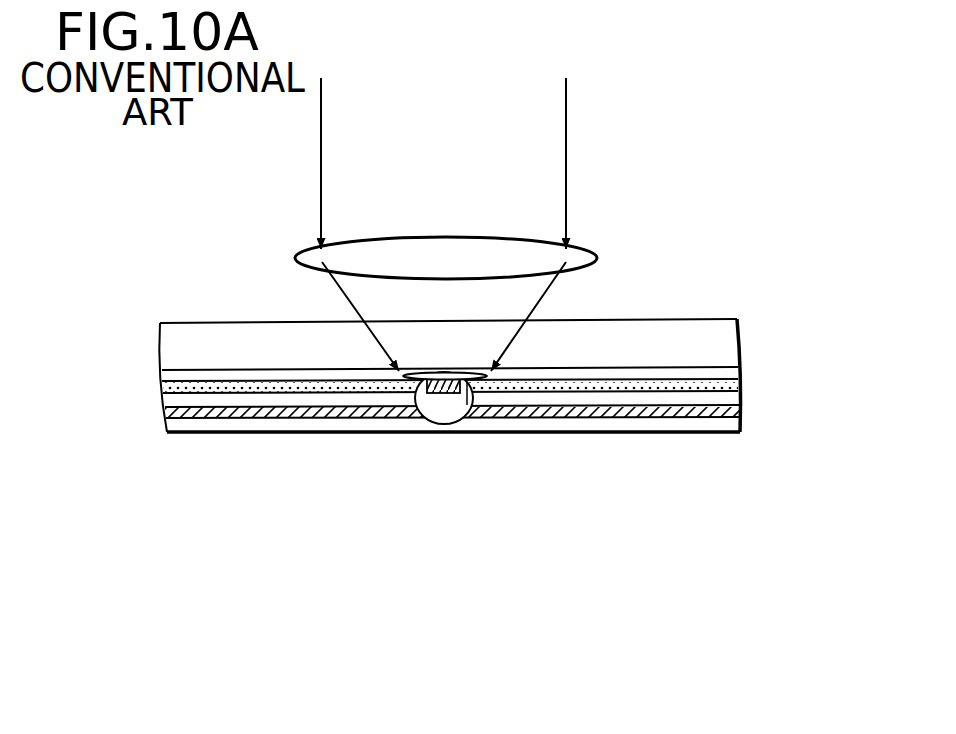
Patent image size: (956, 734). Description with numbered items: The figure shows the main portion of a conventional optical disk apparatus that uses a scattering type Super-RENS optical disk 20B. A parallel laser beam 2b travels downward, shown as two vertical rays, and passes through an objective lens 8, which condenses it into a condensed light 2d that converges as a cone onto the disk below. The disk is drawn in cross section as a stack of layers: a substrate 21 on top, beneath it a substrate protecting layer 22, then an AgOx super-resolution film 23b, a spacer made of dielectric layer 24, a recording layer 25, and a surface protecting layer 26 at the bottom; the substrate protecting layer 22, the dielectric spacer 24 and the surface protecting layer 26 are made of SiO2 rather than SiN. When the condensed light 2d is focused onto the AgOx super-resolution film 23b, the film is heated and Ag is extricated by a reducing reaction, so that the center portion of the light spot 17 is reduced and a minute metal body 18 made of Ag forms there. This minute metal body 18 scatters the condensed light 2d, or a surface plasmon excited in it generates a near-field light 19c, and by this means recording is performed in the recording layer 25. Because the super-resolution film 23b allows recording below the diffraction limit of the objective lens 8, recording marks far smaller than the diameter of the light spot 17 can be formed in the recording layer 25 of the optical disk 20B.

The parallel laser beam 2b is at (568, 168).
The objective lens 8 is at (295, 256).
The condensed light 2d is at (548, 287).
The scattering type Super-RENS optical disk 20B is at (698, 288).
The substrate 21 is at (722, 341).
The substrate protecting layer 22 is at (165, 376).
The AgOx super-resolution film 23b is at (737, 386).
The spacer made of dielectric layer 24 is at (168, 400).
The recording layer 25 is at (737, 411).
The surface protecting layer 26 is at (170, 424).
The deformed region 18 is at (425, 411).
The light spot 17 is at (485, 412).
The near-field light 19c is at (455, 410).